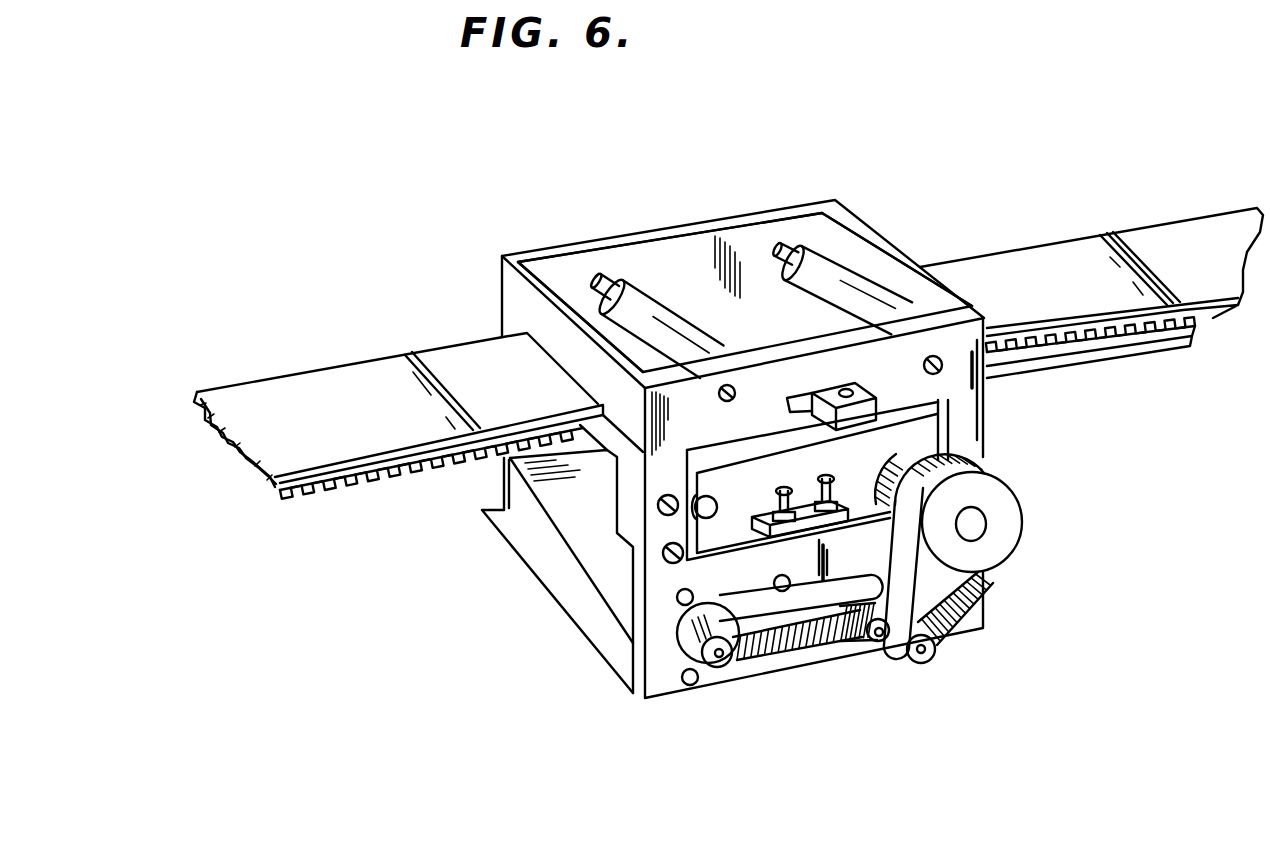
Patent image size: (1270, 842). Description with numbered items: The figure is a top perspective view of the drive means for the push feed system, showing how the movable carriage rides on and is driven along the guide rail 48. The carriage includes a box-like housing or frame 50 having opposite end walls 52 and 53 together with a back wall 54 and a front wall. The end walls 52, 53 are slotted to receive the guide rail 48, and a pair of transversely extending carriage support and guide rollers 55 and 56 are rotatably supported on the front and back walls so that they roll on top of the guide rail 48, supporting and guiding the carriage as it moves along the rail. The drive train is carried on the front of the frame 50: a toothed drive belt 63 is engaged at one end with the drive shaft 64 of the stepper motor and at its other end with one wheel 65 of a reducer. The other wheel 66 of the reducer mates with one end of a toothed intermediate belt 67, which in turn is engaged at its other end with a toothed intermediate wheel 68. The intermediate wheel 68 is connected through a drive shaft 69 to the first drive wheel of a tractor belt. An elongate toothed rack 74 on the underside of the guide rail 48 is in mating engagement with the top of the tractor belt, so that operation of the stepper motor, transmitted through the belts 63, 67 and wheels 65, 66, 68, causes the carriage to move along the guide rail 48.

The guide rail 48 is at (350, 363).
The box-like housing or frame 50 is at (868, 220).
The end wall 52 is at (552, 285).
The end wall 53 is at (893, 245).
The back wall 54 is at (685, 222).
The carriage support and guide roller 55 is at (660, 292).
The carriage support and guide roller 56 is at (825, 250).
The toothed drive belt 63 is at (813, 653).
The drive shaft 64 is at (720, 657).
The wheel of the reducer 65 is at (935, 659).
The wheel of the reducer 66 is at (872, 643).
The toothed intermediate belt 67 is at (975, 577).
The toothed intermediate wheel 68 is at (1000, 508).
The drive shaft 69 is at (883, 490).
The elongate toothed rack 74 is at (393, 477).